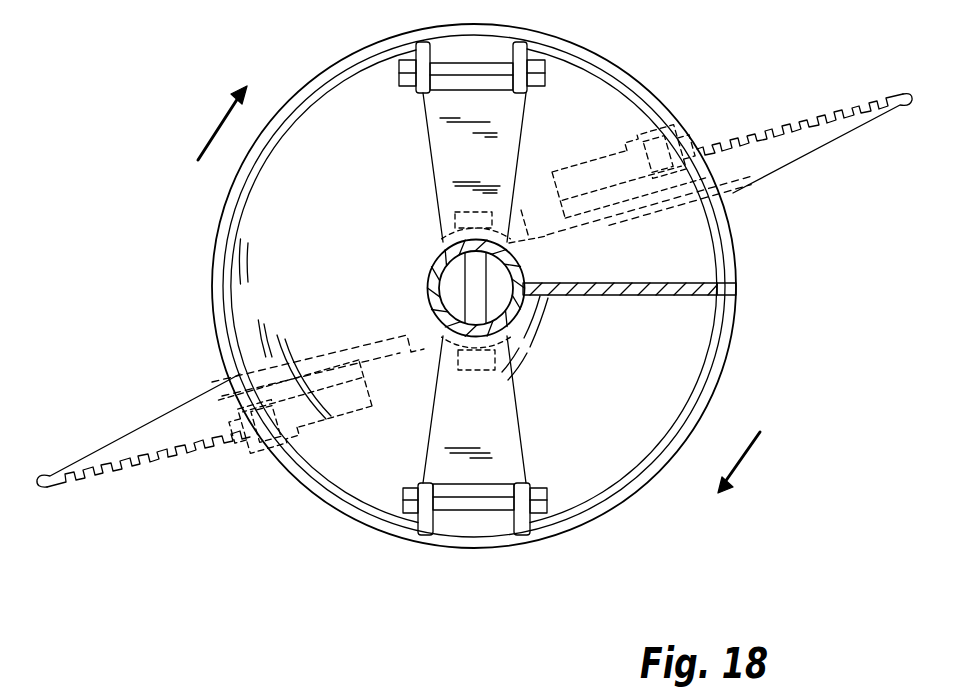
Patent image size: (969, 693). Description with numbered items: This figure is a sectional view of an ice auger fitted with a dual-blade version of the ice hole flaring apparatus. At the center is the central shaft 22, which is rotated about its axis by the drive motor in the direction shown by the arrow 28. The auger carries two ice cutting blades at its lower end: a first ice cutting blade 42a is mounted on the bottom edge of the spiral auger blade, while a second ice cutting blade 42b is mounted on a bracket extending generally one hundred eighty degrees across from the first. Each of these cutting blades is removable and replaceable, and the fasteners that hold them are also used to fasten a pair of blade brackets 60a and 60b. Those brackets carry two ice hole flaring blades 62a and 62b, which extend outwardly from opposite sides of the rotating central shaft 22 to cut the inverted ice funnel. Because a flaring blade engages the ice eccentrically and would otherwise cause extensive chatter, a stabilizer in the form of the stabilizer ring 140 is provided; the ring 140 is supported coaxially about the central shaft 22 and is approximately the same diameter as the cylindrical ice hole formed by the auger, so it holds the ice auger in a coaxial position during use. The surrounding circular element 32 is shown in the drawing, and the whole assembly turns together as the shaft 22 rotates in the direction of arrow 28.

The central shaft 22 is at (436, 266).
The arrow 28 is at (209, 136).
The housing 32 is at (622, 418).
The first ice cutting blade 42a is at (545, 240).
The second ice cutting blade 42b is at (340, 348).
The blade bracket 60a is at (581, 164).
The blade bracket 60b is at (338, 420).
The ice hole flaring blade 62a is at (786, 166).
The ice hole flaring blade 62b is at (136, 432).
The stabilizer ring 140 is at (563, 53).